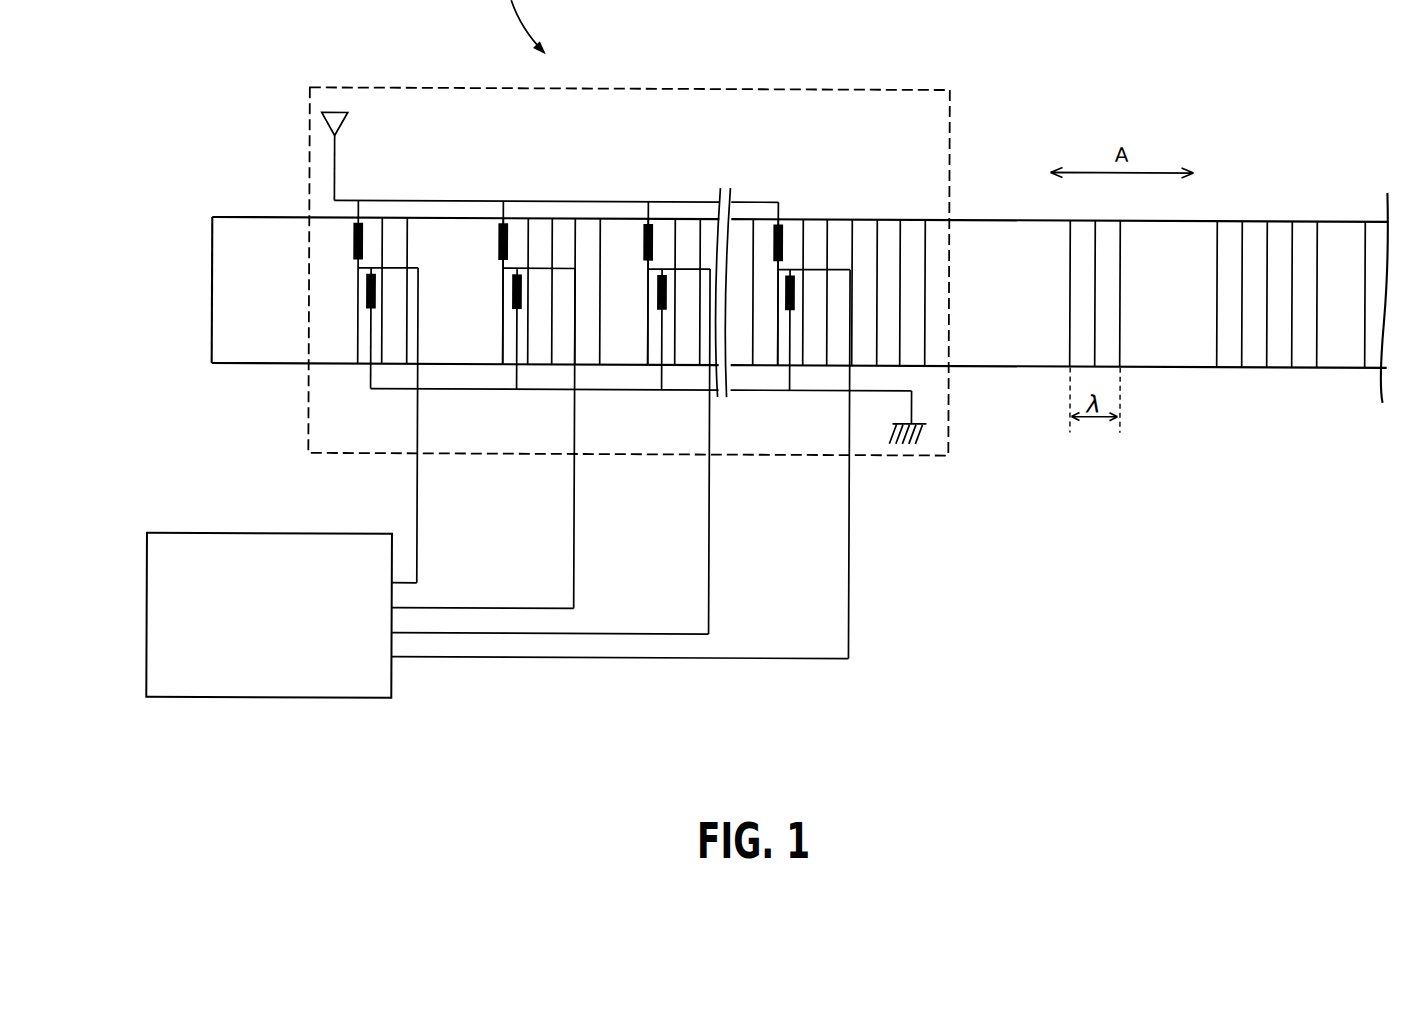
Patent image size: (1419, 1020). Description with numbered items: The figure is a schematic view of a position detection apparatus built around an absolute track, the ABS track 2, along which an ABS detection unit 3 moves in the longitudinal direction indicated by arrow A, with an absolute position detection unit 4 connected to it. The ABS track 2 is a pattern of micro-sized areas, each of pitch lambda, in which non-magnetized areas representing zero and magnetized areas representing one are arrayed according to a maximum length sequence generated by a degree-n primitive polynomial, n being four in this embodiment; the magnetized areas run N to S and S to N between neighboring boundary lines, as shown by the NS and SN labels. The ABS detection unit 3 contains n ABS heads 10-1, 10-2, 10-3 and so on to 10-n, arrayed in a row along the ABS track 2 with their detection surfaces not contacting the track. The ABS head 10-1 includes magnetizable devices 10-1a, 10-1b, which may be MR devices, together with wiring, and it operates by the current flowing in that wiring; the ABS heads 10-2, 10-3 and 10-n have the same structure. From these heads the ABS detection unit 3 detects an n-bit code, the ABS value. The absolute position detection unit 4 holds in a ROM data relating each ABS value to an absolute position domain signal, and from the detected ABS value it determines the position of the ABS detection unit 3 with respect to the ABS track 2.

The ABS track 2 is at (1037, 364).
The ABS detection unit 3 is at (632, 373).
The absolute position detection unit 4 is at (239, 535).
The ABS head 10-1 is at (335, 367).
The ABS head 10-2 is at (509, 267).
The ABS head 10-3 is at (652, 267).
The ABS head 10-n is at (782, 267).
The magnetizable device 10-1a is at (354, 240).
The magnetizable device 10-1b is at (366, 303).